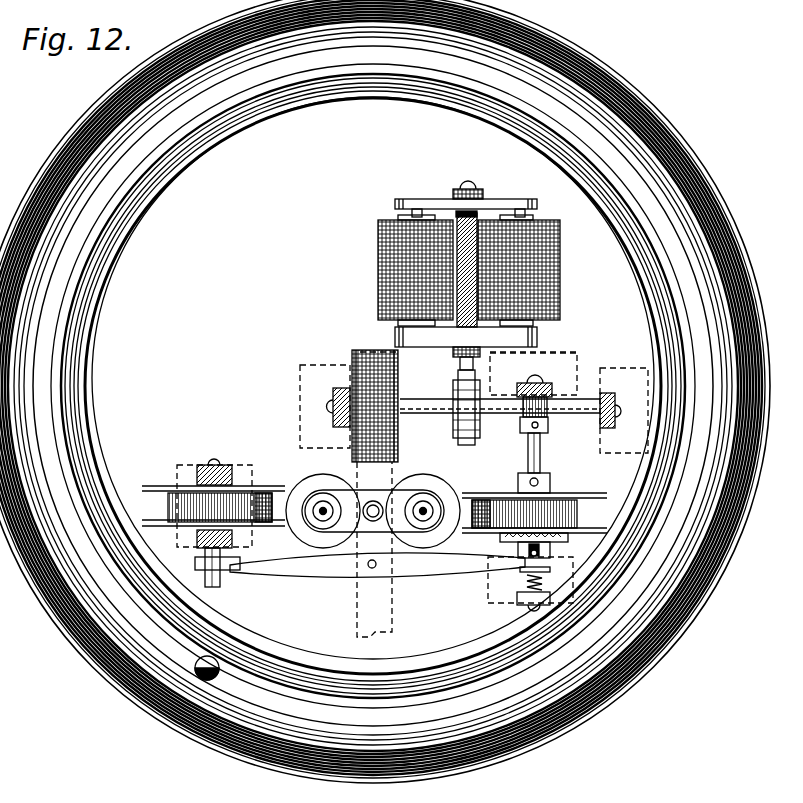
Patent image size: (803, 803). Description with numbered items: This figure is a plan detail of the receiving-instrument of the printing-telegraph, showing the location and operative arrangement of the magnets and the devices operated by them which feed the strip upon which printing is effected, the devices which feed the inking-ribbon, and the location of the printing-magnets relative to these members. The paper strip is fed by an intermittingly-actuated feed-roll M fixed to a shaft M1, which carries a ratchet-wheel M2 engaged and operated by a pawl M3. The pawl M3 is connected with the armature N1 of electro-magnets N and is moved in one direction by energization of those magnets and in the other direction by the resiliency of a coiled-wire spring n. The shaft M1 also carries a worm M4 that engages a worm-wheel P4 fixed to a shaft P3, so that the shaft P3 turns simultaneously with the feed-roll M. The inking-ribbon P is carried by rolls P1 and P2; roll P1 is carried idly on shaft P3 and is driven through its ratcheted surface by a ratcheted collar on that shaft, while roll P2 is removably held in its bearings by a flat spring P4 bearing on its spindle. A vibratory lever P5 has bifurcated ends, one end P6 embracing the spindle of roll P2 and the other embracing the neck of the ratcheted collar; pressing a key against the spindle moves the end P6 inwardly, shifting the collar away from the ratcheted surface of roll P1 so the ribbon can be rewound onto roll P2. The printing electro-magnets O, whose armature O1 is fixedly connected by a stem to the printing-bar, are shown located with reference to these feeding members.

The armature N1 is at (410, 205).
The electro-magnets N is at (469, 270).
The coiled-wire spring n is at (478, 214).
The feed-roll M is at (352, 362).
The shaft M1 is at (447, 406).
The ratchet-wheel M2 is at (472, 437).
The pawl M3 is at (460, 420).
The worm M4 is at (553, 418).
The inking-ribbon P is at (472, 512).
The inking-ribbon roll P1 is at (525, 563).
The inking-ribbon roll P2 is at (580, 540).
The shaft P3 is at (540, 462).
The worm-wheel P4 is at (550, 420).
The vibratory lever P5 is at (218, 587).
The bifurcated end of lever P6 is at (227, 568).
The printing electro-magnets O is at (375, 502).
The armature O1 is at (385, 506).